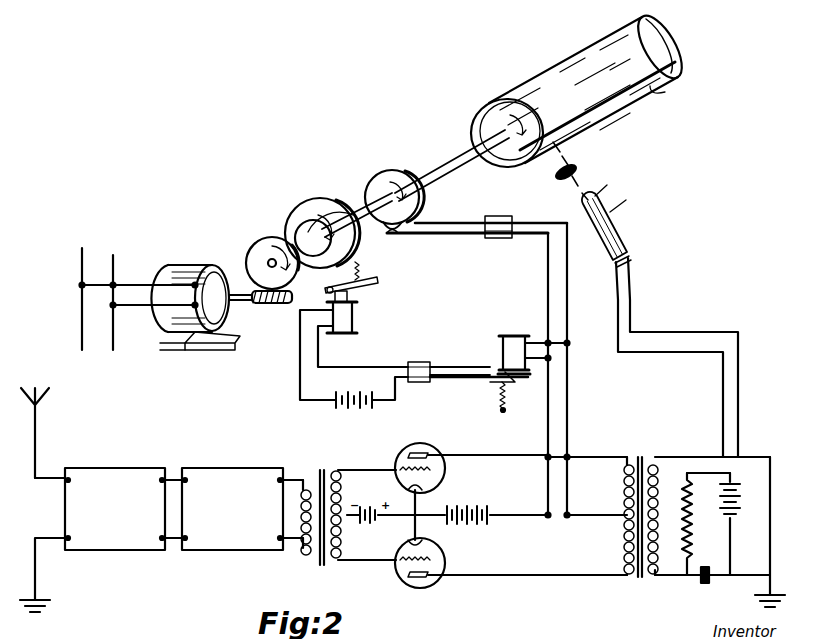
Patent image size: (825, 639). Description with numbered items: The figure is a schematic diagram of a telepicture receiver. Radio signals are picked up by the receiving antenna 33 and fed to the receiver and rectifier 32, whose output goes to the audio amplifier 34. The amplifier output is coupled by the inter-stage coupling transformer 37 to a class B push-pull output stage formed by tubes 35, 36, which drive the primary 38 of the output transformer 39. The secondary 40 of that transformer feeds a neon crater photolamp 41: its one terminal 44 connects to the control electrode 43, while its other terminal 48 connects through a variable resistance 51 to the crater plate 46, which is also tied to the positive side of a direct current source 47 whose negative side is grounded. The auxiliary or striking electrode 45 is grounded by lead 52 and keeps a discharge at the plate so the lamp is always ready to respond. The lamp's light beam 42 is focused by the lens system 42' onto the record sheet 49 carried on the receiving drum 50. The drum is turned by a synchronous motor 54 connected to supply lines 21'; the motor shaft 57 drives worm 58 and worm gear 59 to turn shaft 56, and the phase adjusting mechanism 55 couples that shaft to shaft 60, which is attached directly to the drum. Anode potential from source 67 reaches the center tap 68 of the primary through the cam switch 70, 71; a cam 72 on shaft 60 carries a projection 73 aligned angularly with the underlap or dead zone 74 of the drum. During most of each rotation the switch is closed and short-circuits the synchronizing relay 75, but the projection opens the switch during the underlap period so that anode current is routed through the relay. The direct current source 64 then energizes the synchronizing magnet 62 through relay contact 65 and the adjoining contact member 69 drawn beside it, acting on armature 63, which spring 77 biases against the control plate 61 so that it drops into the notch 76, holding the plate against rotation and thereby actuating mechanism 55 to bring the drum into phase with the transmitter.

The supply lines 21' is at (139, 306).
The receiver and rectifier 32 is at (125, 468).
The receiving antenna 33 is at (38, 444).
The audio amplifier 34 is at (212, 468).
The push-pull output stage tube 35 is at (436, 447).
The push-pull output stage tube 36 is at (430, 585).
The inter-stage coupling transformer 37 is at (322, 565).
The primary 38 is at (632, 580).
The output transformer 39 is at (642, 580).
The secondary 40 is at (640, 460).
The photolamp 41 is at (630, 232).
The light beam 42 is at (572, 169).
The lens system 42' is at (585, 167).
The control electrode 43 is at (588, 213).
The terminal 44 is at (660, 462).
The auxiliary electrode 45 is at (627, 199).
The crater plate 46 is at (609, 184).
The direct current source 47 is at (735, 520).
The terminal 48 is at (660, 578).
The record sheet 49 is at (556, 78).
The receiving drum 50 is at (484, 118).
The variable resistance 51 is at (690, 512).
The lead 52 is at (772, 462).
The synchronous motor 54 is at (205, 262).
The synchronizing phase adjusting mechanism 55 is at (320, 222).
The shaft 56 is at (300, 236).
The motor shaft 57 is at (243, 302).
The worm 58 is at (280, 304).
The worm gear 59 is at (258, 251).
The shaft 60 is at (458, 148).
The control plate 61 is at (352, 203).
The synchronizing magnet 62 is at (355, 318).
The armature 63 is at (709, 580).
The direct current potential source 64 is at (362, 410).
The relay contact 65 is at (470, 385).
The anode potential source 67 is at (487, 505).
The center tap 68 is at (612, 518).
The contact 69 is at (455, 366).
The synchronizing cam switch 70 is at (447, 236).
The synchronizing cam switch 71 is at (440, 222).
The cam 72 is at (386, 171).
The projection 73 is at (396, 238).
The underlap zone 74 is at (667, 94).
The synchronizing relay 75 is at (508, 345).
The notch 76 is at (330, 284).
The spring 77 is at (360, 268).